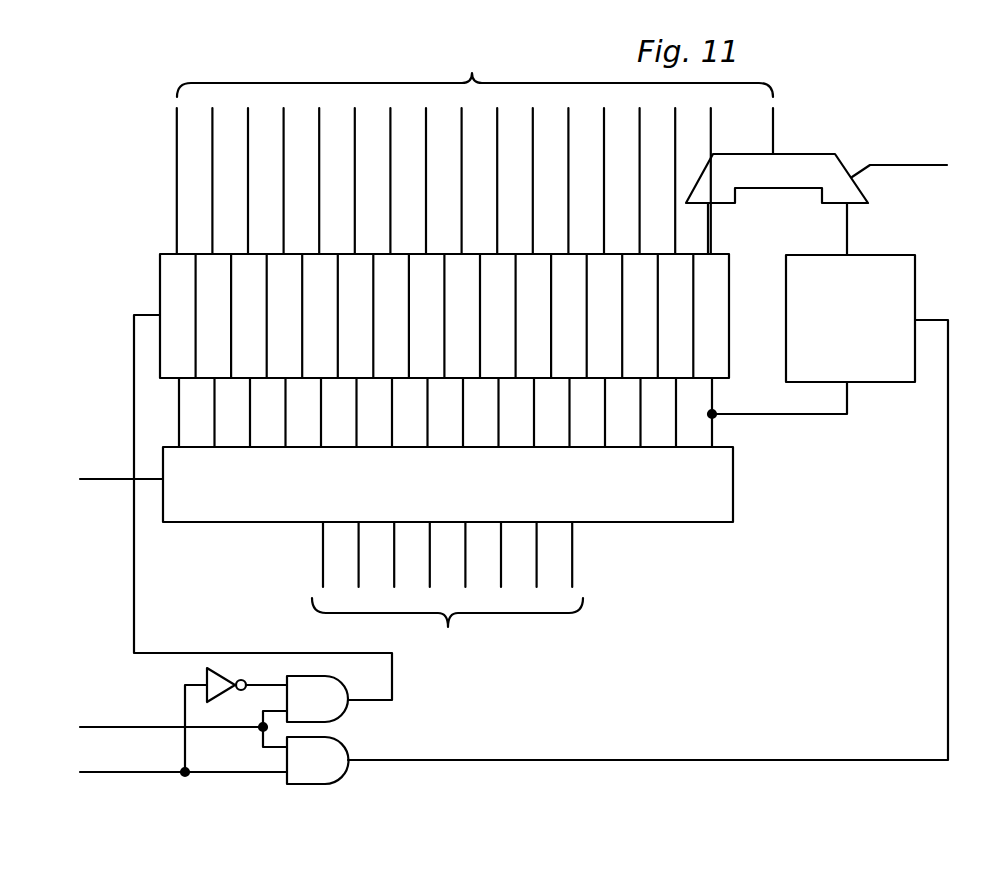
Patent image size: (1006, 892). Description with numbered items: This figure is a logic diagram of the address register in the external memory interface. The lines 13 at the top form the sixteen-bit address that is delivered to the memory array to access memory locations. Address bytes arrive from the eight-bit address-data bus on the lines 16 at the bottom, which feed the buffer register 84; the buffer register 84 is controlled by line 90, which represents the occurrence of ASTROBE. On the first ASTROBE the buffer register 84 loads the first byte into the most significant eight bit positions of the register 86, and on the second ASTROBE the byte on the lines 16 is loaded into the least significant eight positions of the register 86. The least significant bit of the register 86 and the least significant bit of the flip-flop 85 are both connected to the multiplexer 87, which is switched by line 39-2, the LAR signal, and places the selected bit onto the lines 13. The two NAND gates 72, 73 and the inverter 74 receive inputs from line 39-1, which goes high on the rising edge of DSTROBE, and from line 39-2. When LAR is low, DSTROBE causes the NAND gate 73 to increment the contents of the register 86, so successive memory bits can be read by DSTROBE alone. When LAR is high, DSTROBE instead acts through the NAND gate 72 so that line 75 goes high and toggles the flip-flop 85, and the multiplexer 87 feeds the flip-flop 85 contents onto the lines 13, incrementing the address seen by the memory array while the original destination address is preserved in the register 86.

The lines 13 is at (460, 53).
The lines 16 is at (442, 631).
The line 39-1 is at (165, 726).
The line 39-2 is at (170, 770).
The NAND gate 72 is at (327, 767).
The NAND gate 73 is at (327, 707).
The inverter 74 is at (207, 677).
The line 75 is at (690, 761).
The buffer register 84 is at (722, 498).
The flip-flop 85 is at (878, 267).
The register 86 is at (733, 268).
The multiplexer 87 is at (822, 152).
The line 90 is at (110, 478).